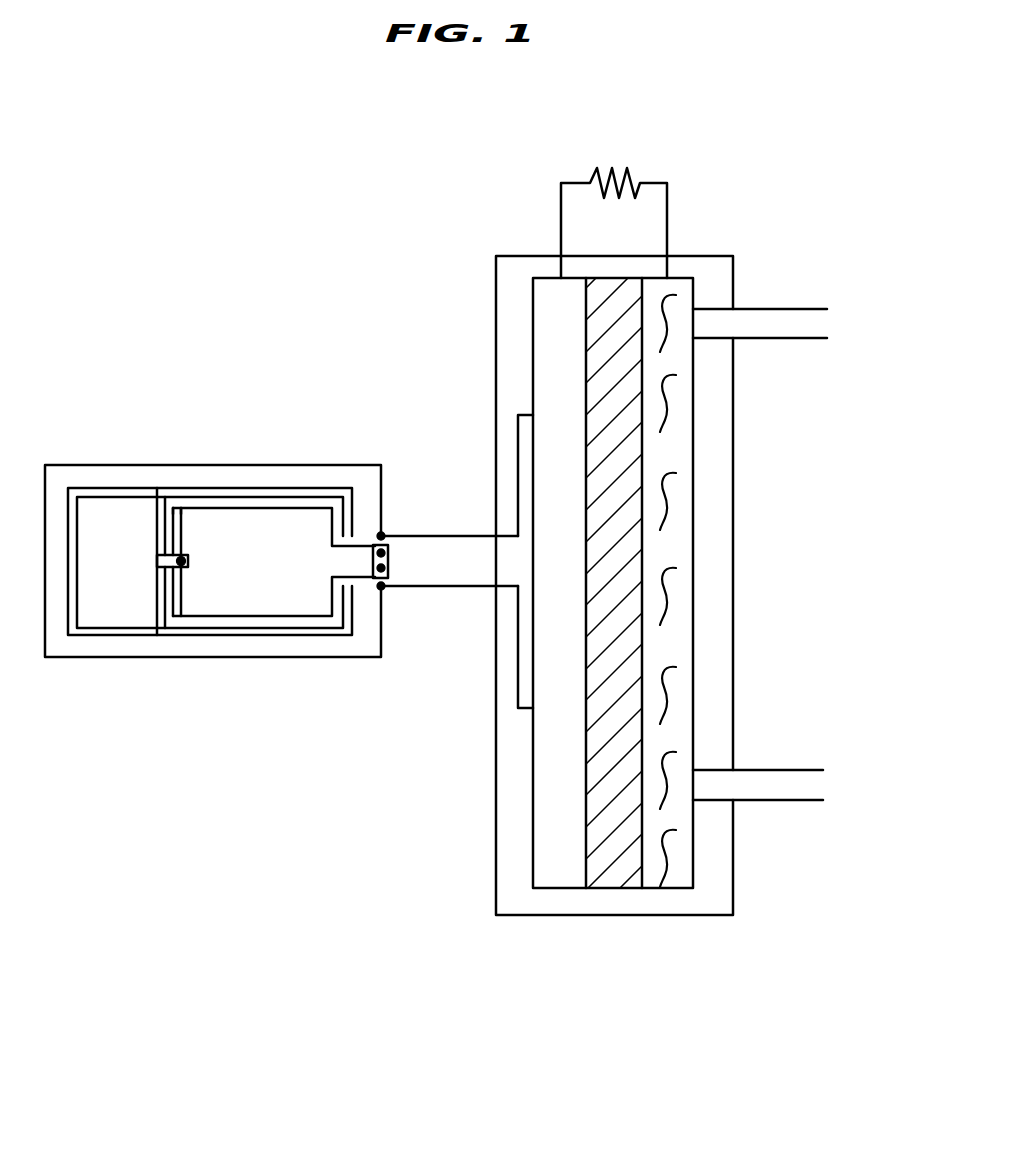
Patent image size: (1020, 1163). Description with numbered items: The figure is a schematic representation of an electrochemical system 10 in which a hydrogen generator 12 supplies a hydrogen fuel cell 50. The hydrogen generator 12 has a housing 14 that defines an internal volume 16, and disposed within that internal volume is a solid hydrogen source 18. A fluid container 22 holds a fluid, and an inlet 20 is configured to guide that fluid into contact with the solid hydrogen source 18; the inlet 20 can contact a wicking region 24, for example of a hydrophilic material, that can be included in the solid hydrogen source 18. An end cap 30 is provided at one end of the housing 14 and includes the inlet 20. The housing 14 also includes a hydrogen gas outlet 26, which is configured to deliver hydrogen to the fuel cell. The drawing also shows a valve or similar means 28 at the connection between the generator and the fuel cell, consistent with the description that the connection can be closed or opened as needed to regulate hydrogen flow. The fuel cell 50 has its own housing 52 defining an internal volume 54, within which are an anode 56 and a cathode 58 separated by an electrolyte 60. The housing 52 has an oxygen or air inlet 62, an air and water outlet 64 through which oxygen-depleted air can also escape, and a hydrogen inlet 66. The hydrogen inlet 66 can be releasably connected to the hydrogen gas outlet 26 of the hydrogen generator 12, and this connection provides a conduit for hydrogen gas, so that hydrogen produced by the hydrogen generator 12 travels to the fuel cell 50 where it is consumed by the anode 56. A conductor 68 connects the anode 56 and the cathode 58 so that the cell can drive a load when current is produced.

The electrochemical system 10 is at (355, 236).
The hydrogen generator 12 is at (110, 465).
The housing 14 is at (268, 640).
The internal volume 16 is at (202, 488).
The solid hydrogen source 18 is at (240, 530).
The inlet 20 is at (163, 570).
The fluid container 22 is at (97, 619).
The wicking region 24 is at (181, 565).
The hydrogen gas outlet 26 is at (373, 577).
The valve 28 is at (385, 552).
The end cap 30 is at (175, 508).
The hydrogen fuel cell 50 is at (537, 230).
The housing 52 is at (718, 255).
The internal volume 54 is at (613, 905).
The anode 56 is at (547, 388).
The cathode 58 is at (677, 430).
The electrolyte 60 is at (632, 645).
The oxygen or air inlet 62 is at (812, 323).
The air and water outlet 64 is at (810, 783).
The hydrogen inlet 66 is at (442, 573).
The conductor 68 is at (655, 182).